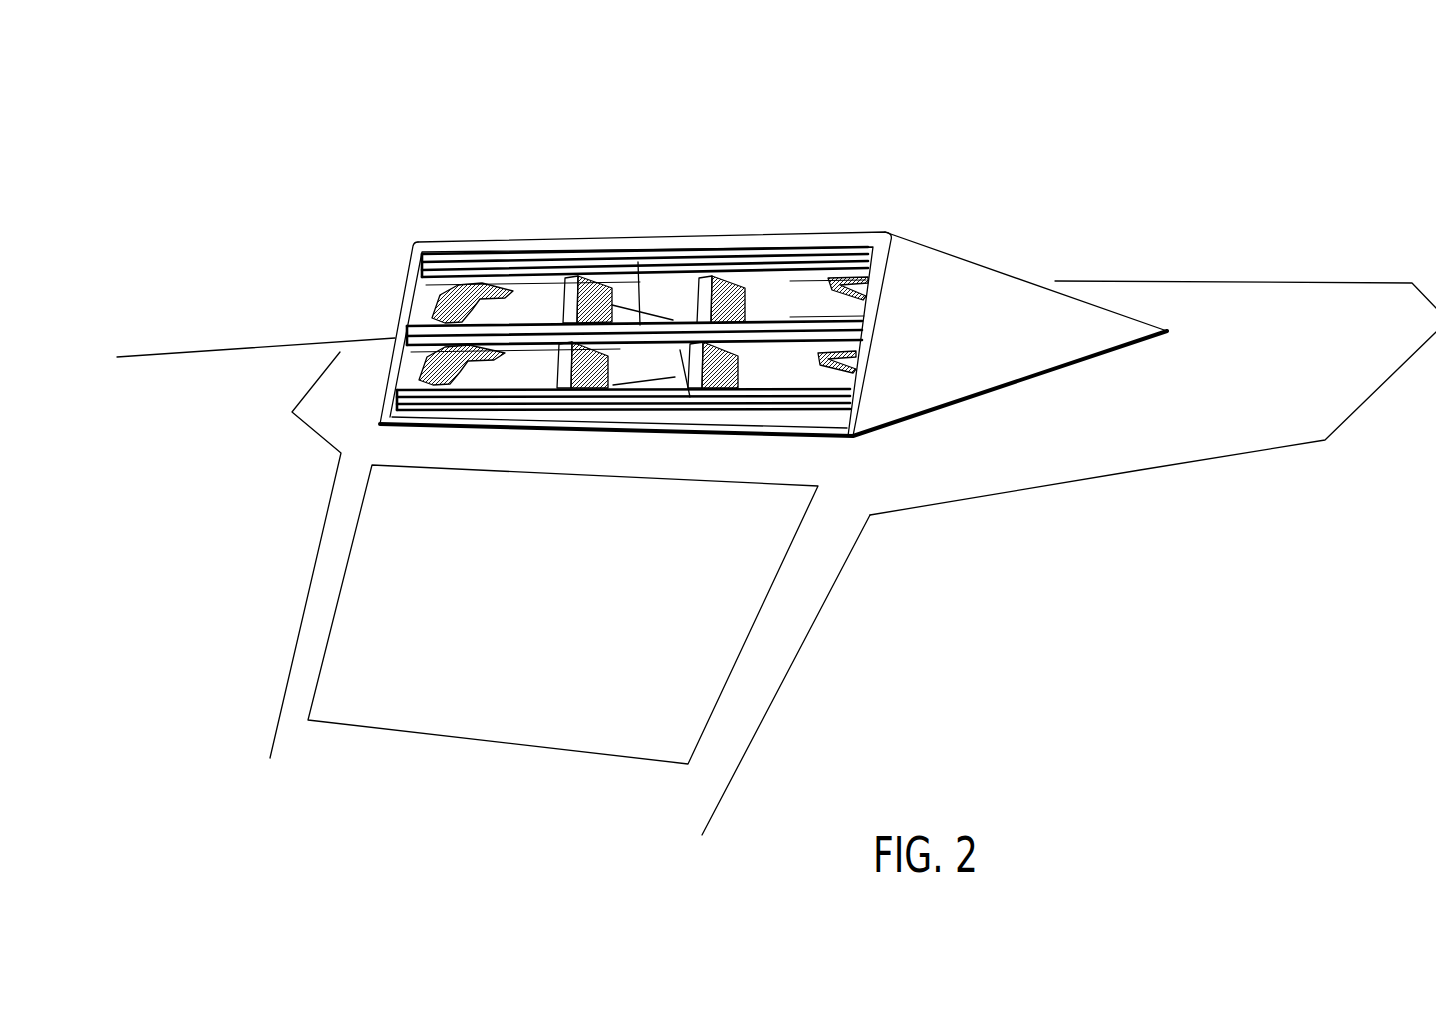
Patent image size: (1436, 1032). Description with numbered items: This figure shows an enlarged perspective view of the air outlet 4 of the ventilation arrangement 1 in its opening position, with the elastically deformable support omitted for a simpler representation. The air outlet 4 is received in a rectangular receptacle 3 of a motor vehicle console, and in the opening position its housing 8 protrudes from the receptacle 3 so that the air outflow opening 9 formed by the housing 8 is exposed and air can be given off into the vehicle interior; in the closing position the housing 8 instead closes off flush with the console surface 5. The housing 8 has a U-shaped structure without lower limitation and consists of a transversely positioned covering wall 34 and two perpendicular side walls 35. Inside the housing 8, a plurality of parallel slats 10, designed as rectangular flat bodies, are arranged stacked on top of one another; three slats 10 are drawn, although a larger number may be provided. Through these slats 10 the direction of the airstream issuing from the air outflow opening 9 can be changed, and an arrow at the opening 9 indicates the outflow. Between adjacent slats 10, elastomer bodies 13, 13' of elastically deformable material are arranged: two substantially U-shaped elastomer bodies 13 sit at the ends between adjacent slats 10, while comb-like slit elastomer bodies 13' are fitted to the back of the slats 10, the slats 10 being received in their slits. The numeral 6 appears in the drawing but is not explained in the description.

The ventilation arrangement 1 is at (351, 200).
The receptacle 3 is at (1025, 373).
The air outlet 4 is at (640, 276).
The console surface 5 is at (1268, 318).
The panel 6 is at (670, 633).
The housing 8 is at (722, 238).
The covering wall 34 is at (755, 160).
The air outflow opening 9 is at (505, 373).
The slats 10 is at (675, 397).
The U-shaped elastomer bodies 13 is at (638, 268).
The comb-like slit elastomer bodies 13' is at (704, 406).
The side walls 35 is at (403, 300).